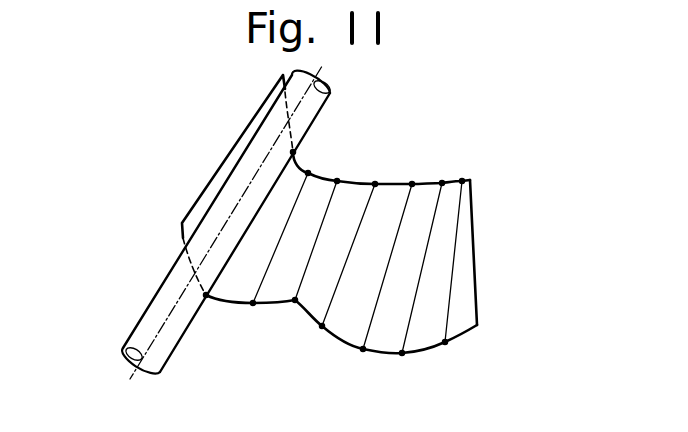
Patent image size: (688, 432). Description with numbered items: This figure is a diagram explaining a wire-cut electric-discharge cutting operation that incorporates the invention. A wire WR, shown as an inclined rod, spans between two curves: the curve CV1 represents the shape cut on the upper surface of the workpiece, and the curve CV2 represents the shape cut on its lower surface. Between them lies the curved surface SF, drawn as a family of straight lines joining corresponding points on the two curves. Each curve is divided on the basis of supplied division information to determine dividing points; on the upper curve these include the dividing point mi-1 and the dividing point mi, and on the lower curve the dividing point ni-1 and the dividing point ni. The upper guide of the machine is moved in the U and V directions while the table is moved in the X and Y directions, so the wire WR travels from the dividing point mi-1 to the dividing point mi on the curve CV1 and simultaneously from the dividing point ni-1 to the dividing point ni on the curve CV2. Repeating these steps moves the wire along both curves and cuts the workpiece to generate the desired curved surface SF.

The wire WR is at (143, 328).
The curved surface SF is at (355, 246).
The curve CV1 is at (450, 181).
The curve CV2 is at (422, 352).
The dividing point mi-1 is at (293, 152).
The dividing point mi is at (308, 173).
The dividing point ni-1 is at (206, 295).
The dividing point ni is at (253, 303).